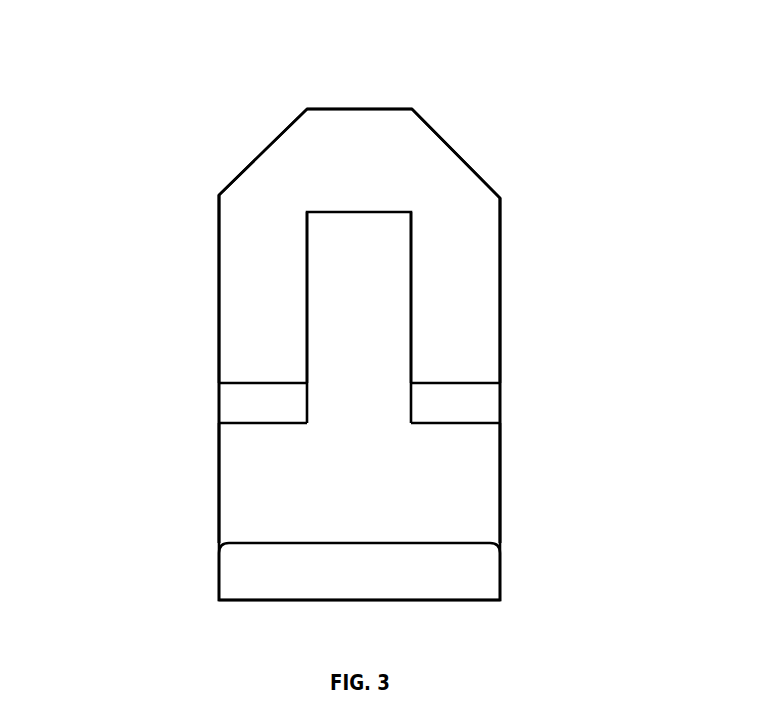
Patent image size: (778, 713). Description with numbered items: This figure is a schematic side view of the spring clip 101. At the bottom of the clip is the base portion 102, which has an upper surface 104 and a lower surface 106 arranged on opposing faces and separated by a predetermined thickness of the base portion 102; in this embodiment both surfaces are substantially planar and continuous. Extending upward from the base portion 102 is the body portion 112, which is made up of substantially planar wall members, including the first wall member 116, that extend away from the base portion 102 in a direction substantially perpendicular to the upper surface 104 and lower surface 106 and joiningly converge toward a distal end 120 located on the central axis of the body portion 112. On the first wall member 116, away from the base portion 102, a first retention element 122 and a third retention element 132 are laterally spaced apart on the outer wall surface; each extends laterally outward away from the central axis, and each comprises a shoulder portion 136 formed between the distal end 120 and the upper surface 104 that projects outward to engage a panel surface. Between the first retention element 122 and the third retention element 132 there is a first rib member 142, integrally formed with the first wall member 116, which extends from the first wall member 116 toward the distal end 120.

The spring clip 101 is at (170, 119).
The body portion 112 is at (189, 296).
The distal end 120 is at (370, 109).
The first rib member 142 is at (363, 297).
The third retention element 132 is at (247, 331).
The first retention element 122 is at (462, 340).
The shoulder portion 136 is at (250, 385).
The first wall member 116 is at (378, 491).
The upper surface 104 is at (245, 540).
The base portion 102 is at (243, 568).
The lower surface 106 is at (253, 600).